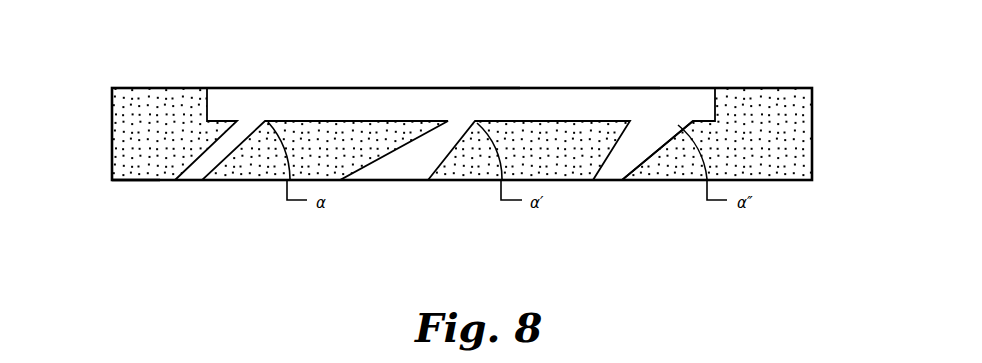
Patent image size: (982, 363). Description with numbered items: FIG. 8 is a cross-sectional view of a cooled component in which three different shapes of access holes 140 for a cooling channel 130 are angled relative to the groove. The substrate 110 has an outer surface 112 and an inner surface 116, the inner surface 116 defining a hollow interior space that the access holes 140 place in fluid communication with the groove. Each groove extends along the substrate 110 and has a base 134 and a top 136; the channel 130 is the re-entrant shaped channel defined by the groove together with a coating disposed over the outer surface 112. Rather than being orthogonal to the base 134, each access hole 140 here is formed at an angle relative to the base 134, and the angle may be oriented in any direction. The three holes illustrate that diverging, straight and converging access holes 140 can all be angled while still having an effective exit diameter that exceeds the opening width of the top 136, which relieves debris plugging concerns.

The substrate 110 is at (112, 146).
The outer surface 112 is at (278, 88).
The inner surface 116 is at (129, 183).
The re-entrant shaped channel 130 is at (492, 88).
The base 134 is at (700, 142).
The top 136 is at (632, 88).
The access hole 140 is at (203, 166).